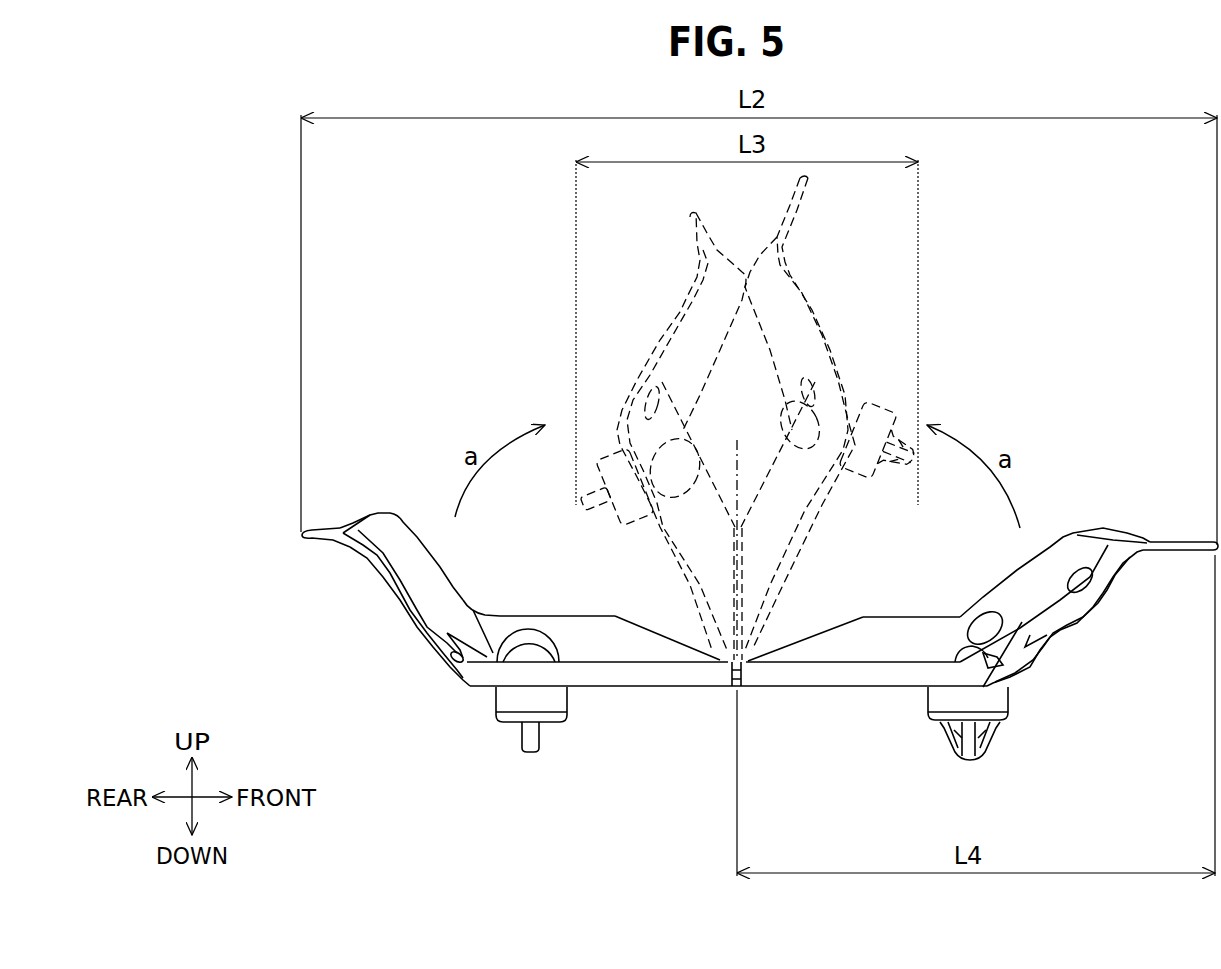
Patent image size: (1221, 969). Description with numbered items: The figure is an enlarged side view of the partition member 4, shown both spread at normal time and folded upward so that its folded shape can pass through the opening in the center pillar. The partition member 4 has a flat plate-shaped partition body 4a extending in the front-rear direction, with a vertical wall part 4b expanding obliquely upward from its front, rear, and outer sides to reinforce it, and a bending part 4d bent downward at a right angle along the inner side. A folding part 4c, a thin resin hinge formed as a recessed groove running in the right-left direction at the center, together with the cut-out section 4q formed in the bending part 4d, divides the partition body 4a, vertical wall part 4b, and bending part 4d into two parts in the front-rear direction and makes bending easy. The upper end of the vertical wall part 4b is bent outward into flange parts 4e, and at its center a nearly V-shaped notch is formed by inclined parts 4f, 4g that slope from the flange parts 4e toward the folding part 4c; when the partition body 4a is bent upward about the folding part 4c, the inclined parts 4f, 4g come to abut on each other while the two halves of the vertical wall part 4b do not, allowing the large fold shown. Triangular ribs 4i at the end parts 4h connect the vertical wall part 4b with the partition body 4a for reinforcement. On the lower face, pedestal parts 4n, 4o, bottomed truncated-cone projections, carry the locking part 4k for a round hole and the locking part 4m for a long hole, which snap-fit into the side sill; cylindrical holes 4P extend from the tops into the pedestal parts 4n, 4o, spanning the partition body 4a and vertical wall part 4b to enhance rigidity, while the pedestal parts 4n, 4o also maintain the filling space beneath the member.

The partition member 4 is at (835, 318).
The partition body 4a is at (680, 668).
The vertical wall part 4b is at (598, 640).
The folding part 4c is at (706, 664).
The bending part 4d is at (845, 690).
The flange part 4e is at (330, 532).
The inclined part 4f is at (806, 648).
The inclined part 4g is at (666, 648).
The end part 4h is at (447, 672).
The rib 4i is at (470, 625).
The locking part for a round hole 4k is at (945, 745).
The locking part for a long hole 4m is at (535, 732).
The pedestal part 4n is at (944, 697).
The pedestal part 4o is at (555, 697).
The cylindrical hole 4P is at (536, 655).
The cut-out section 4q is at (740, 687).